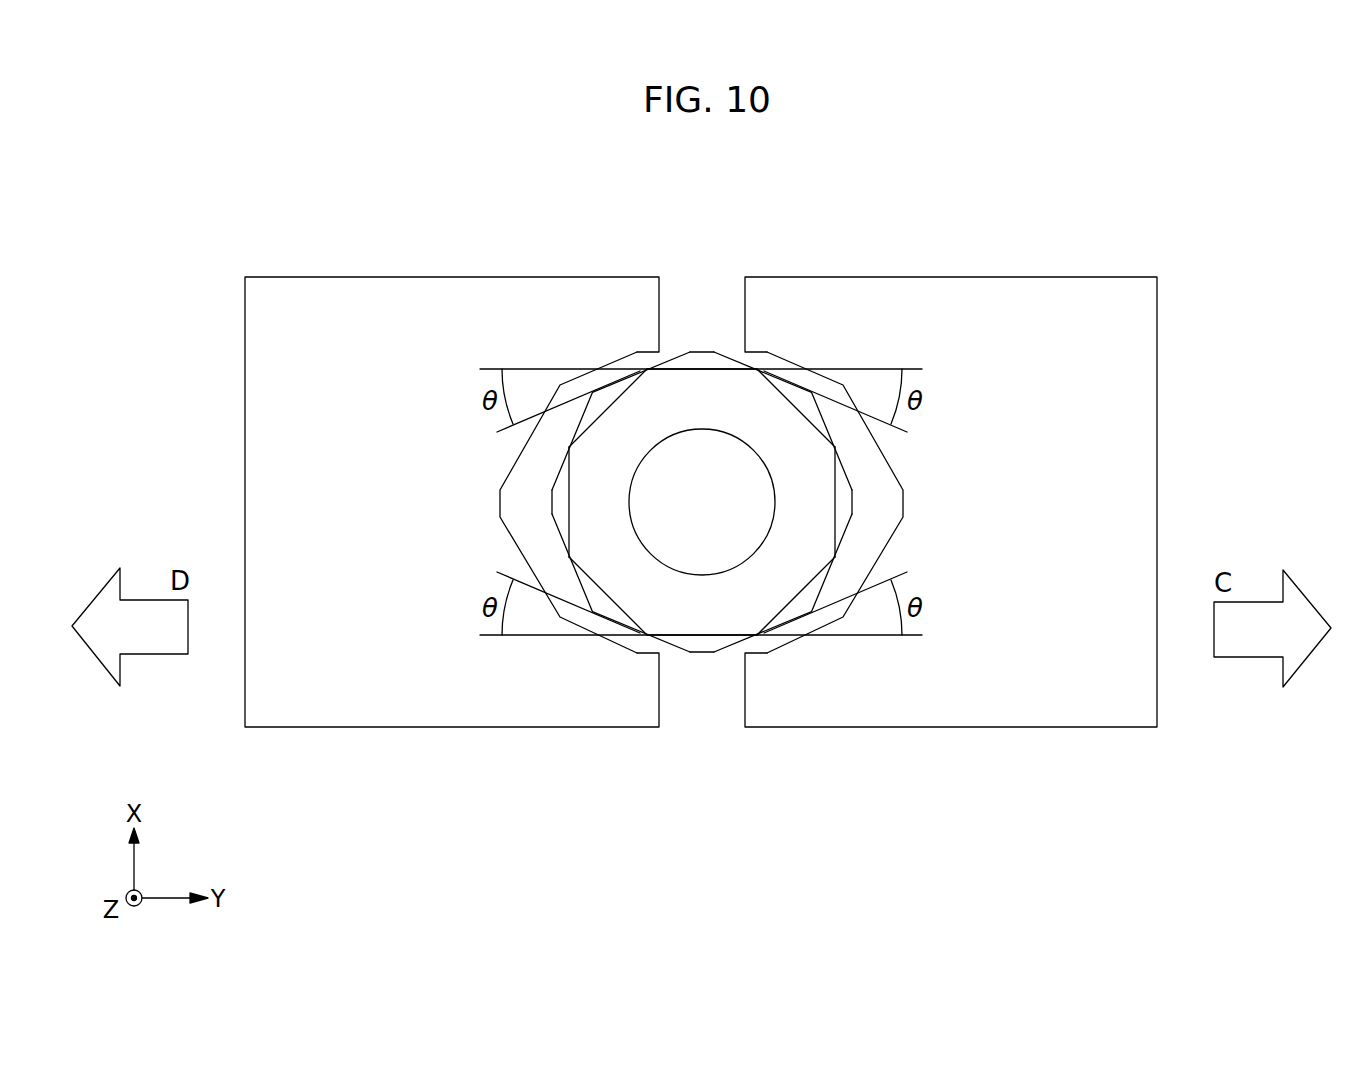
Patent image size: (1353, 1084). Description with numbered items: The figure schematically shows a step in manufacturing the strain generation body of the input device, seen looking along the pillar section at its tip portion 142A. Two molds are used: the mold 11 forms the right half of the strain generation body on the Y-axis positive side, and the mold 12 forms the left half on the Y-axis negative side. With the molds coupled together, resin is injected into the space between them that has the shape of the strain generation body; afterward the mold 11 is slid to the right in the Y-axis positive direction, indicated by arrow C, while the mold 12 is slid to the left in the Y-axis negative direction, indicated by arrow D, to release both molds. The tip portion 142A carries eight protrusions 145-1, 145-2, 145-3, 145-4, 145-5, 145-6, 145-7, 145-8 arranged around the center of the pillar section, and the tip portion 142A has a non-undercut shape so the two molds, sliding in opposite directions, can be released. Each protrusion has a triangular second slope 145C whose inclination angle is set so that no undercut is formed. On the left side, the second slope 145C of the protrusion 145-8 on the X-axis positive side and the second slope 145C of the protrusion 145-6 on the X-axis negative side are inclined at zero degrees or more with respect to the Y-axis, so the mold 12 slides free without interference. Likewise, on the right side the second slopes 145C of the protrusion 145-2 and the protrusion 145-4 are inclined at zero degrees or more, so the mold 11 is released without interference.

The mold 11 is at (1096, 275).
The mold 12 is at (300, 275).
The tip portion 142A is at (756, 350).
The protrusion 145-1 is at (703, 358).
The protrusion 145-2 is at (806, 414).
The protrusion 145-3 is at (845, 503).
The protrusion 145-4 is at (808, 603).
The protrusion 145-5 is at (702, 652).
The protrusion 145-6 is at (594, 600).
The protrusion 145-7 is at (560, 503).
The protrusion 145-8 is at (598, 414).
The second slope 145C is at (622, 368).